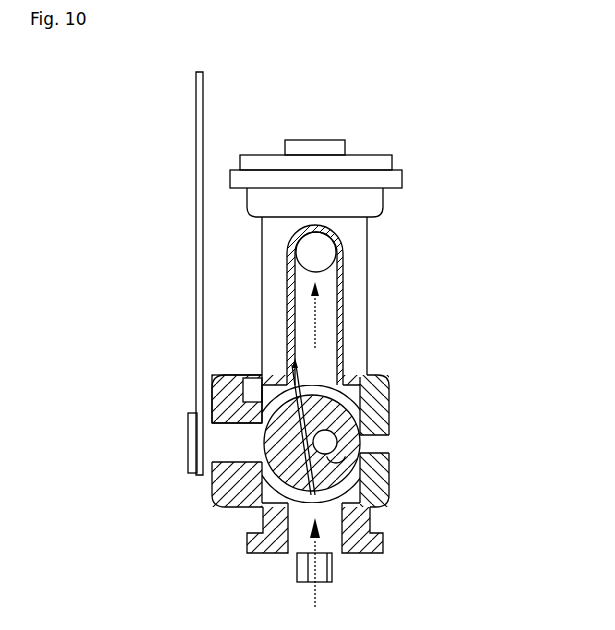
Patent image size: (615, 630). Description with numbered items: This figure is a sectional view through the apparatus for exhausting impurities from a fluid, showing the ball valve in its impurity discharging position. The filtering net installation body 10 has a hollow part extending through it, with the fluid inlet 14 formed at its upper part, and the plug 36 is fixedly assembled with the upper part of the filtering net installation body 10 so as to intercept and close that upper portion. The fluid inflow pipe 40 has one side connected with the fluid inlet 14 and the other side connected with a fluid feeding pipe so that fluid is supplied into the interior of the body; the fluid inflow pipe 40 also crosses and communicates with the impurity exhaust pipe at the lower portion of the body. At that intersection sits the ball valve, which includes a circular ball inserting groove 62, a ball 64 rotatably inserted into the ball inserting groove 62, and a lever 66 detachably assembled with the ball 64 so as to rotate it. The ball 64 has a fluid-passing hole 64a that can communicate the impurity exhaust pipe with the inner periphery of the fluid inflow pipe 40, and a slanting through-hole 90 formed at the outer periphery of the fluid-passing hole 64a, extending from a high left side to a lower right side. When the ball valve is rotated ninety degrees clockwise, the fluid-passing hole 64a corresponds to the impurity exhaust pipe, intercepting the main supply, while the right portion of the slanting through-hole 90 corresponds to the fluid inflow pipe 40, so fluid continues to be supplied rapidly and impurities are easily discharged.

The filtering net installation body 10 is at (250, 265).
The fluid inlet 14 is at (334, 242).
The plug 36 is at (355, 153).
The fluid inflow pipe 40 is at (345, 305).
The ball inserting groove 62 is at (247, 510).
The ball 64 is at (345, 444).
The fluid-passing hole 64a is at (338, 458).
The lever 66 is at (196, 150).
The slanting through-hole 90 is at (215, 383).